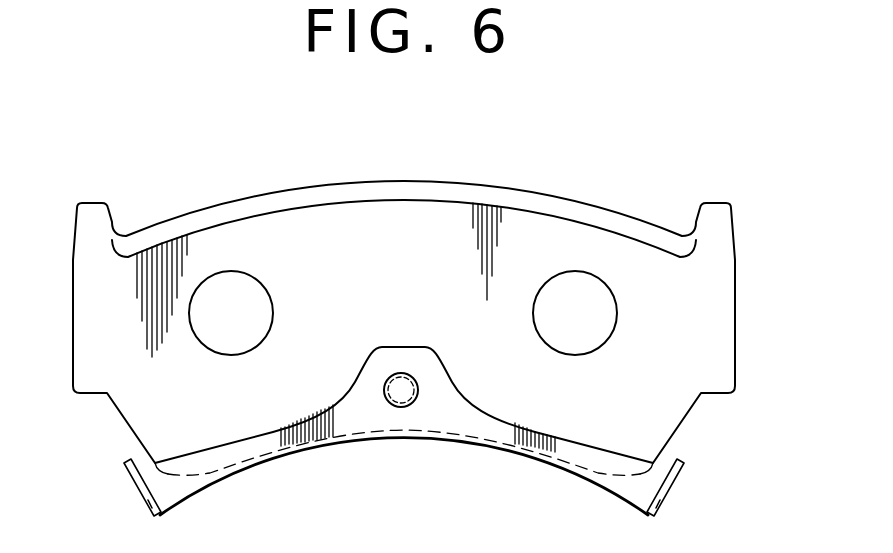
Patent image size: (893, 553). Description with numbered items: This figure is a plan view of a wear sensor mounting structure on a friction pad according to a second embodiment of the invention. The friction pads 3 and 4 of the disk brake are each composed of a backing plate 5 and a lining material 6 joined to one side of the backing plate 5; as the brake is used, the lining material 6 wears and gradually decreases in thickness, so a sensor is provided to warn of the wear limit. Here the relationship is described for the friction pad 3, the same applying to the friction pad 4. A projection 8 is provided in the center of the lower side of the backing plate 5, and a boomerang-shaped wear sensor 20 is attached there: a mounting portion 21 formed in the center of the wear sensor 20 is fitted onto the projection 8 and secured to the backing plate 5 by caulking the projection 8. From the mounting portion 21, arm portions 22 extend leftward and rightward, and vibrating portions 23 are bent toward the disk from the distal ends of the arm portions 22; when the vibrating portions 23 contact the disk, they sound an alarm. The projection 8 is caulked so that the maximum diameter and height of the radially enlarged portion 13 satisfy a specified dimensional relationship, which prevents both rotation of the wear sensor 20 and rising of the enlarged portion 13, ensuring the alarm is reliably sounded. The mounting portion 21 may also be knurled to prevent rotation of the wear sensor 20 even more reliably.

The friction pad 3 is at (408, 181).
The friction pad 4 is at (404, 228).
The backing plate 5 is at (545, 239).
The lining material 6 is at (247, 289).
The projection 8 is at (396, 406).
The radially enlarged portion 13 is at (418, 398).
The wear sensor 20 is at (529, 457).
The mounting portion 21 is at (366, 418).
The arm portions 22 is at (252, 452).
The vibrating portions 23 is at (126, 466).